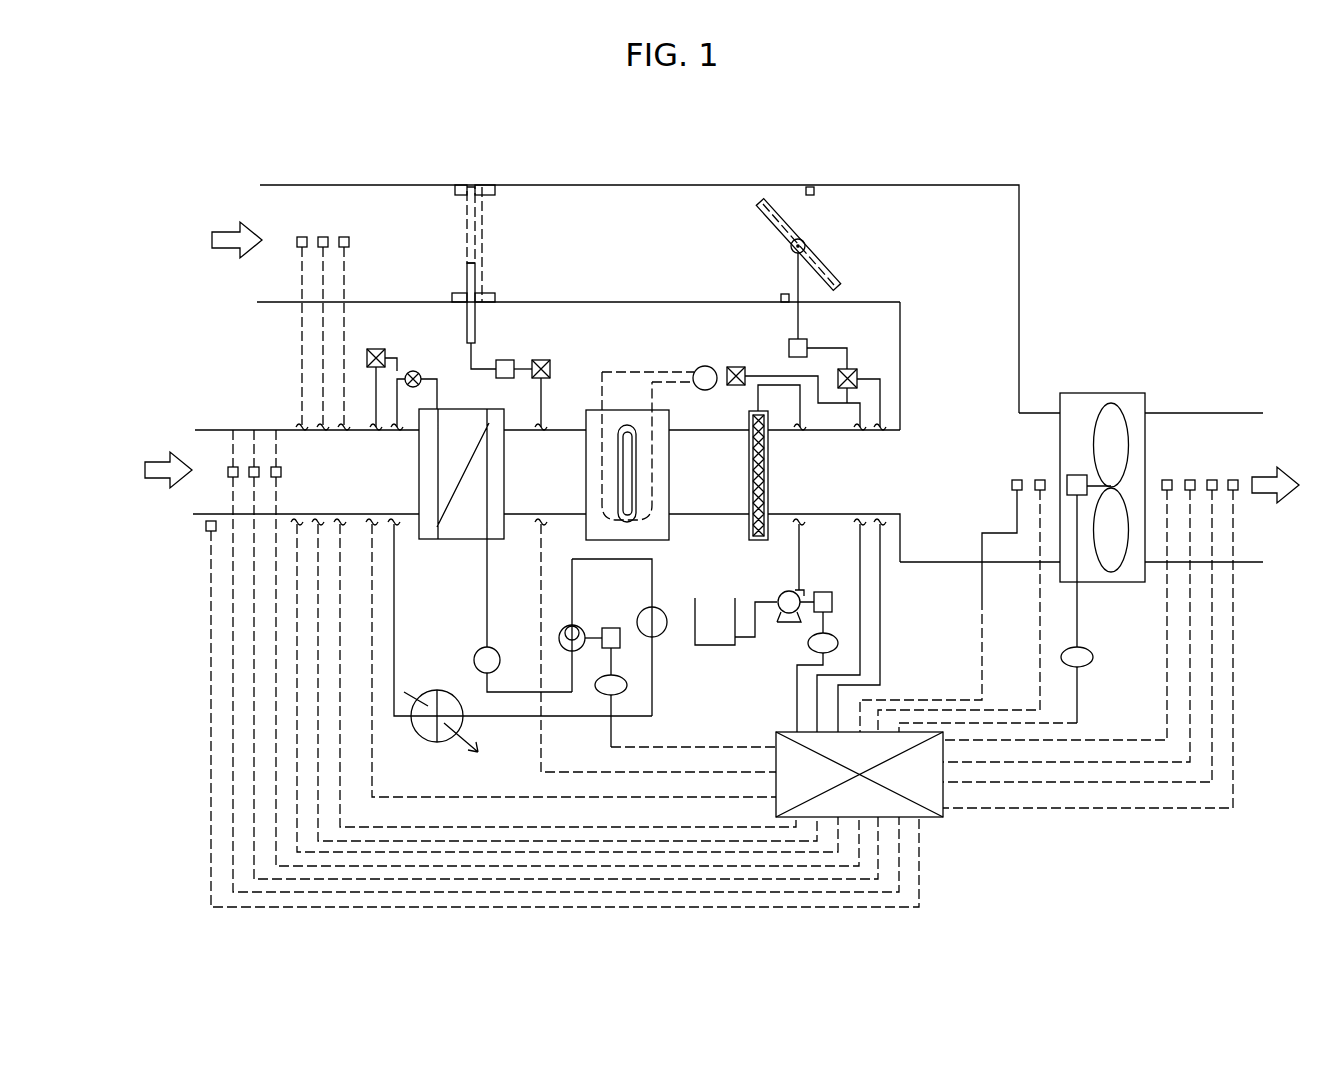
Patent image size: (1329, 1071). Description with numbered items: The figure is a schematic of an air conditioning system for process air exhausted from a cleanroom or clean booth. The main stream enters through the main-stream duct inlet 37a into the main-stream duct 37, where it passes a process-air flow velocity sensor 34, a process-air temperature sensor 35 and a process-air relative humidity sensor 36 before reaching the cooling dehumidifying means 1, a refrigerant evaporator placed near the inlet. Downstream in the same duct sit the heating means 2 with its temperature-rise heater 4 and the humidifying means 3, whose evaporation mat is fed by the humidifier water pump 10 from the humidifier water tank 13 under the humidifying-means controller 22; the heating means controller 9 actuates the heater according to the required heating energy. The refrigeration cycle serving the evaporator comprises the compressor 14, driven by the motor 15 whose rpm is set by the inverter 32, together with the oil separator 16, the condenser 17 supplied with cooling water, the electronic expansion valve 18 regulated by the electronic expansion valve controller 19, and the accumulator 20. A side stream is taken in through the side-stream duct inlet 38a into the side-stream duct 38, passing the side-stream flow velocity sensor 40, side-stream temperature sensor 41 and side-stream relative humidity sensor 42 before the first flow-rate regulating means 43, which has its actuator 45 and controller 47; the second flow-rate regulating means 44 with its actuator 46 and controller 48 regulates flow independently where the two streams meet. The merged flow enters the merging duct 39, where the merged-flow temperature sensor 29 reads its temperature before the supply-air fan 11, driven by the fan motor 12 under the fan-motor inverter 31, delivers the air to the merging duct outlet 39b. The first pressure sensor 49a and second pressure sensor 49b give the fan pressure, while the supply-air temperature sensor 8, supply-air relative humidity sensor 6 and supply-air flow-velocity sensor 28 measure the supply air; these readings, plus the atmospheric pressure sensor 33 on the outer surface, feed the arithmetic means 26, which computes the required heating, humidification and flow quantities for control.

The cooling dehumidifying means 1 is at (451, 542).
The heating means 2 is at (588, 408).
The humidifying means 3 is at (748, 527).
The temperature-rise heater 4 is at (696, 369).
The supply-air relative humidity sensor 6 is at (1212, 480).
The supply-air temperature sensor 8 is at (1233, 480).
The heating means controller 9 is at (731, 367).
The humidifier water pump 10 is at (785, 626).
The supply-air fan 11 is at (1120, 405).
The fan motor 12 is at (1080, 474).
The humidifier water tank 13 is at (720, 648).
The compressor 14 is at (566, 627).
The motor 15 is at (611, 627).
The oil separator 16 is at (664, 636).
The condenser 17 is at (420, 738).
The electronic expansion valve 18 is at (419, 371).
The electronic expansion valve controller 19 is at (383, 357).
The accumulator 20 is at (472, 652).
The humidifying-means controller 22 is at (810, 644).
The arithmetic means 26 is at (935, 820).
The supply-air flow-velocity sensor 28 is at (1190, 480).
The merged-flow temperature sensor 29 is at (1012, 488).
The fan-motor inverter 31 is at (1090, 660).
The inverter 32 is at (617, 676).
The atmospheric pressure sensor 33 is at (207, 530).
The process-air flow velocity sensor 34 is at (233, 430).
The process-air temperature sensor 35 is at (254, 430).
The process-air relative humidity sensor 36 is at (276, 430).
The main-stream duct 37 is at (541, 526).
The main-stream duct inlet 37a is at (181, 461).
The side-stream duct 38 is at (1021, 245).
The side-stream duct inlet 38a is at (237, 225).
The merging duct 39 is at (1040, 412).
The merging duct outlet 39b is at (1275, 467).
The side-stream flow velocity sensor 40 is at (302, 237).
The side-stream temperature sensor 41 is at (323, 237).
The side-stream relative humidity sensor 42 is at (344, 237).
The first flow-rate regulating means 43 is at (478, 285).
The second flow-rate regulating means 44 is at (804, 240).
The first flow-rate regulating means actuator 45 is at (508, 360).
The second flow-rate regulating means actuator 46 is at (789, 346).
The first flow-rate regulating means controller 47 is at (547, 360).
The second flow-rate regulating means controller 48 is at (850, 368).
The first pressure sensor 49a is at (1039, 492).
The second pressure sensor 49b is at (1167, 480).